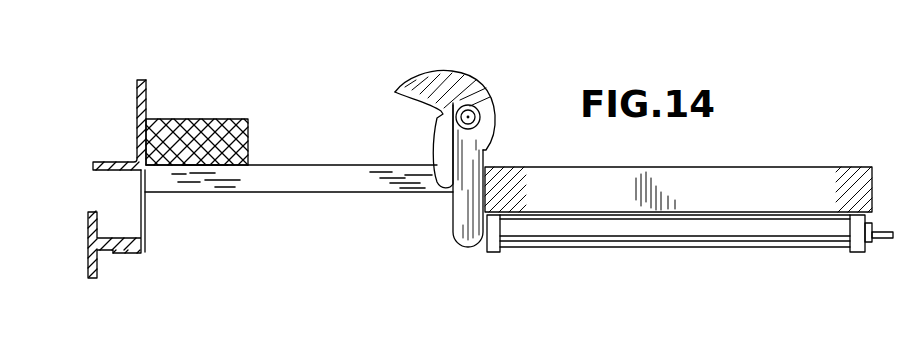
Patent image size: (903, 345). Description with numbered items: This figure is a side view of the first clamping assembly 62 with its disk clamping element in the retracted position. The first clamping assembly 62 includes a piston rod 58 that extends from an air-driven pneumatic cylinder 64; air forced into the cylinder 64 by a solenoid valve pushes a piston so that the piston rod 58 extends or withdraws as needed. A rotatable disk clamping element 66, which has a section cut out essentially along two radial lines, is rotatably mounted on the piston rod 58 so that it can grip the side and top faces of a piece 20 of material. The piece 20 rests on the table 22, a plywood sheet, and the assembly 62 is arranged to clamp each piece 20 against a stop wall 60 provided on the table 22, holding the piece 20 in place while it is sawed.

The stop wall 60 is at (147, 83).
The piece of material 20 is at (223, 120).
The table 22 is at (313, 163).
The rotatable disk clamping element 66 is at (473, 83).
The piston rod 58 is at (483, 247).
The first clamping assembly 62 is at (715, 150).
The air-driven pneumatic cylinder 64 is at (677, 247).